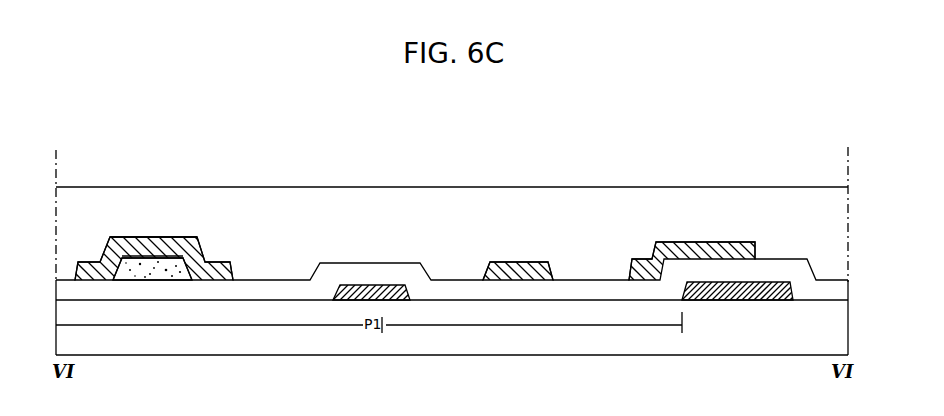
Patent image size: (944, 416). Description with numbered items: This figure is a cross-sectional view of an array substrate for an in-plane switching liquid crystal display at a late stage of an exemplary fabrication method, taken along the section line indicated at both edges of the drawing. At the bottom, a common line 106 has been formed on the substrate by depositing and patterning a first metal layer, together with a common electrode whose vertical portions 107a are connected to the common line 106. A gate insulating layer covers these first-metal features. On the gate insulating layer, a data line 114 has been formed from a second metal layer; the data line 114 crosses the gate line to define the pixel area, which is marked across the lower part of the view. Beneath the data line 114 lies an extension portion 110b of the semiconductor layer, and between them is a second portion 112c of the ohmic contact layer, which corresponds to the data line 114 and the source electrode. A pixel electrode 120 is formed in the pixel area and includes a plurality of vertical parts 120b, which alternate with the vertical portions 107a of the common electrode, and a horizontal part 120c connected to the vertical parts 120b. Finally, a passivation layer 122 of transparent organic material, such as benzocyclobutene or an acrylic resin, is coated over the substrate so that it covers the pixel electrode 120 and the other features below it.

The common line 106 is at (747, 300).
The vertical portions of the common electrode 107a is at (367, 285).
The extension portion of the semiconductor layer 110b is at (155, 280).
The second portion of the ohmic contact layer 112c is at (190, 234).
The data line 114 is at (162, 236).
The pixel electrode 120 is at (678, 143).
The vertical parts of the pixel electrode 120b is at (513, 262).
The horizontal part of the pixel electrode 120c is at (688, 242).
The passivation layer 122 is at (100, 188).